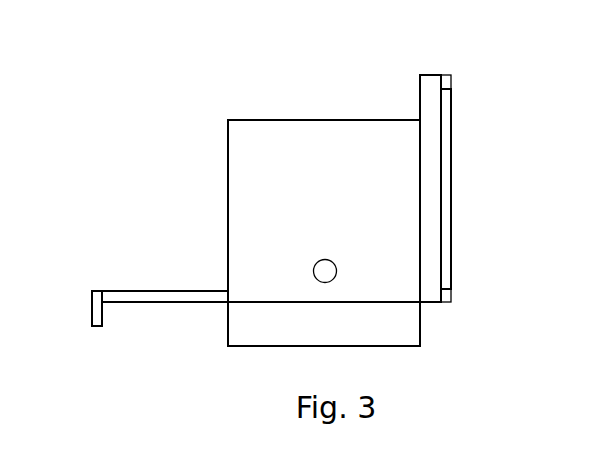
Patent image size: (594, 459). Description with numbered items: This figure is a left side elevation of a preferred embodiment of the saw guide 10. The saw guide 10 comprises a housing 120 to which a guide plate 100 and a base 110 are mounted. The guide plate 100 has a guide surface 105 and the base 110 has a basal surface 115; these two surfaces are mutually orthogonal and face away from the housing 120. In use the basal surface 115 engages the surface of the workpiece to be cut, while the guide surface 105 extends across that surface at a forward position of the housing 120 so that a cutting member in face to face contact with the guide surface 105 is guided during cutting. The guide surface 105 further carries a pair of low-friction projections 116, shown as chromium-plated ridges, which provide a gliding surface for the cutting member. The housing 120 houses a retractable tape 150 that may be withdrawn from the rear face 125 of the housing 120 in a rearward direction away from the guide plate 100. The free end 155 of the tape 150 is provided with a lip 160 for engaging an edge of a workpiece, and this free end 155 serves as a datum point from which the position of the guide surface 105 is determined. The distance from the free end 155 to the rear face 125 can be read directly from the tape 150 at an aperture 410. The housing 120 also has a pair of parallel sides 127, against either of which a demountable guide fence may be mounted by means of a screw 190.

The saw guide 10 is at (463, 70).
The guide plate 100 is at (433, 279).
The guide surface 105 is at (441, 257).
The base 110 is at (400, 320).
The basal surface 115 is at (375, 305).
The low-friction projections 116 is at (449, 177).
The housing 120 is at (300, 130).
The rear face 125 is at (228, 183).
The parallel sides 127 is at (257, 278).
The retractable tape 150 is at (150, 290).
The free end 155 is at (102, 292).
The lip 160 is at (95, 313).
The screw 190 is at (325, 282).
The aperture 410 is at (227, 297).